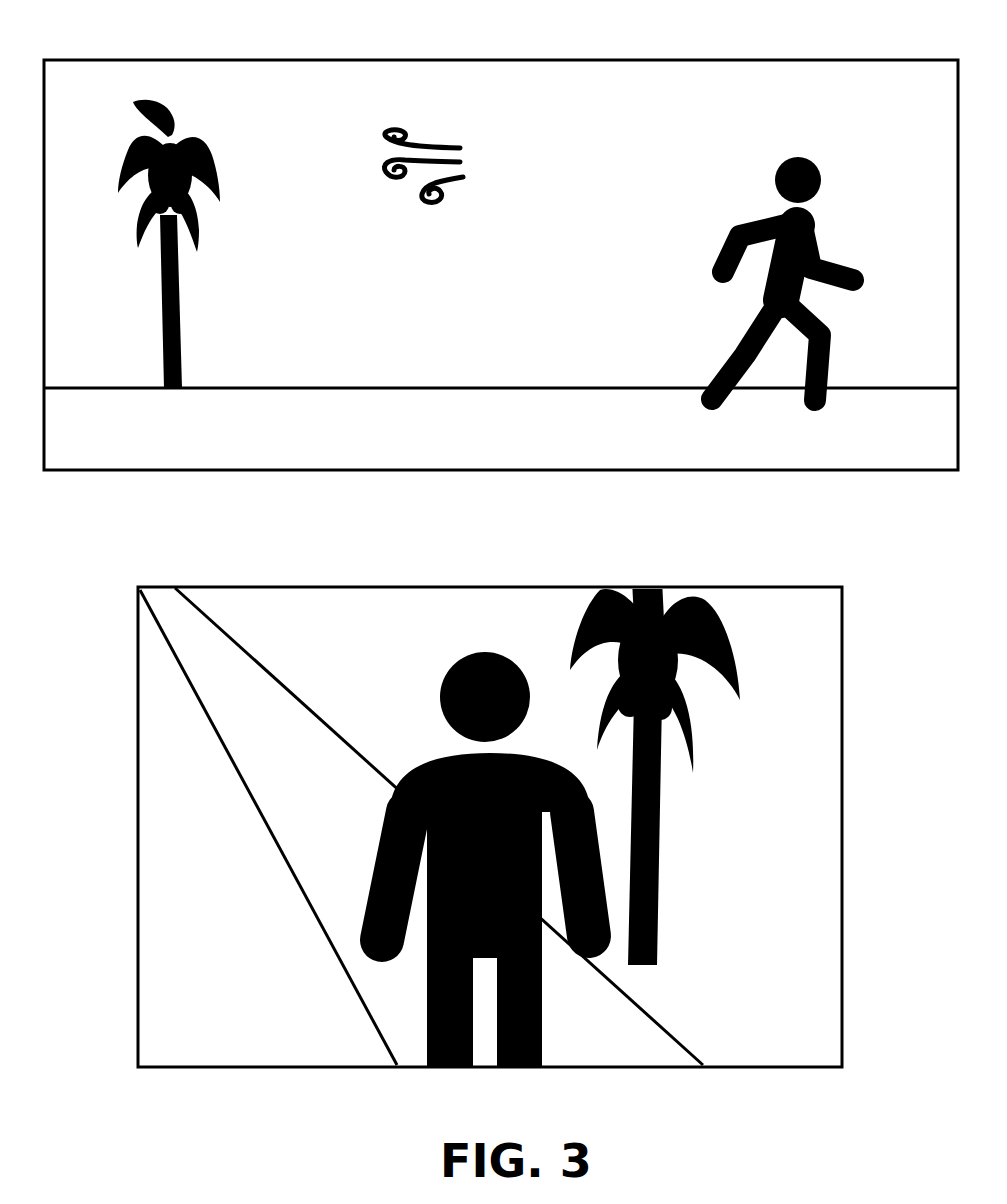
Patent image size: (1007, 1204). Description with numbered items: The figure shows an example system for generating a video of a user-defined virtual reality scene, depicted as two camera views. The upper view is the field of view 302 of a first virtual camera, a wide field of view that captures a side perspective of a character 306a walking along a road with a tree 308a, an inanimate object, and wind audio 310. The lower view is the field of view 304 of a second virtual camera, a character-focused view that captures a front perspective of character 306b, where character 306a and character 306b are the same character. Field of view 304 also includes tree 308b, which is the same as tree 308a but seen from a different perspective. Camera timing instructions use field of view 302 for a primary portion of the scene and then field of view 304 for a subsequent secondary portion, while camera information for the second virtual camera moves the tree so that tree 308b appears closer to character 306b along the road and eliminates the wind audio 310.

The field of view of a first virtual camera 302 is at (385, 60).
The field of view of a second virtual camera 304 is at (490, 587).
The character 306a is at (818, 165).
The character 306b is at (455, 658).
The tree 308a is at (212, 157).
The tree 308b is at (705, 737).
The wind audio 310 is at (443, 138).